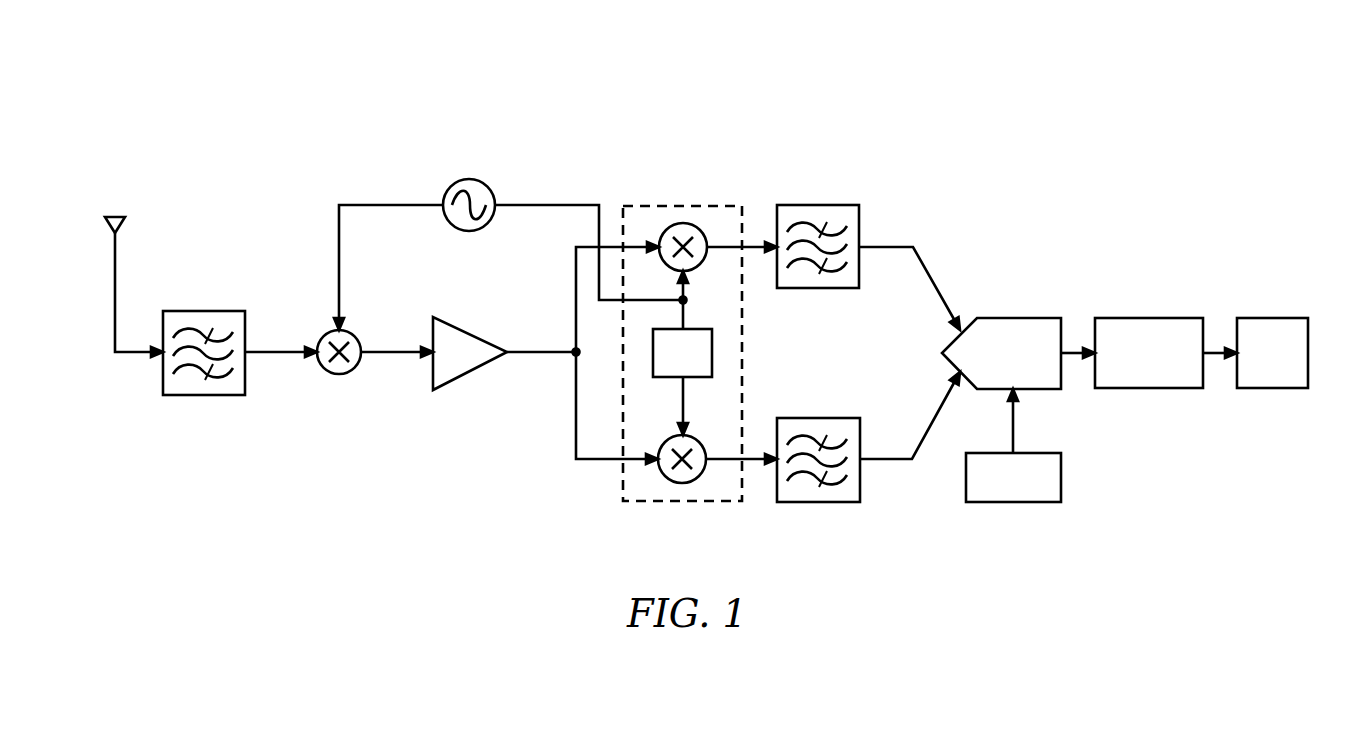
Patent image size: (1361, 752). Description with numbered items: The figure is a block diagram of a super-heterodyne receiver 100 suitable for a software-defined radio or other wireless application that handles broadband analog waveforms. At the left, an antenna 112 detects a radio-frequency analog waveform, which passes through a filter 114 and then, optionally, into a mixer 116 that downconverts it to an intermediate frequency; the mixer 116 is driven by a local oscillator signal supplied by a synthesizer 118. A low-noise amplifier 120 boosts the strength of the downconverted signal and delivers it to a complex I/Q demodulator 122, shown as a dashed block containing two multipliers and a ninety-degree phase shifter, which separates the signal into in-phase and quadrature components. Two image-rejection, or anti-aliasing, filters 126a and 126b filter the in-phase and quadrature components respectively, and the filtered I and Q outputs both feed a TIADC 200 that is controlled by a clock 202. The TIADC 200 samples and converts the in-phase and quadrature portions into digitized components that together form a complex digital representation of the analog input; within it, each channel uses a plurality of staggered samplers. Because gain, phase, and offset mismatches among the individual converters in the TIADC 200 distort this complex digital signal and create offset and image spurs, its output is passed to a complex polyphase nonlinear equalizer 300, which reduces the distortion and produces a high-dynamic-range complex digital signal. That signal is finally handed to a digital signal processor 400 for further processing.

The super-heterodyne receiver 100 is at (924, 100).
The antenna 112 is at (108, 213).
The filter 114 is at (198, 395).
The mixer 116 is at (332, 374).
The synthesizer 118 is at (467, 180).
The low-noise amplifier 120 is at (471, 372).
The complex I/Q demodulator 122 is at (670, 503).
The image-rejection filter 126a is at (818, 203).
The image-rejection filter 126b is at (818, 504).
The TIADC 200 is at (1020, 316).
The clock 202 is at (1061, 476).
The complex polyphase nonlinear equalizer 300 is at (1150, 316).
The digital signal processor 400 is at (1272, 316).